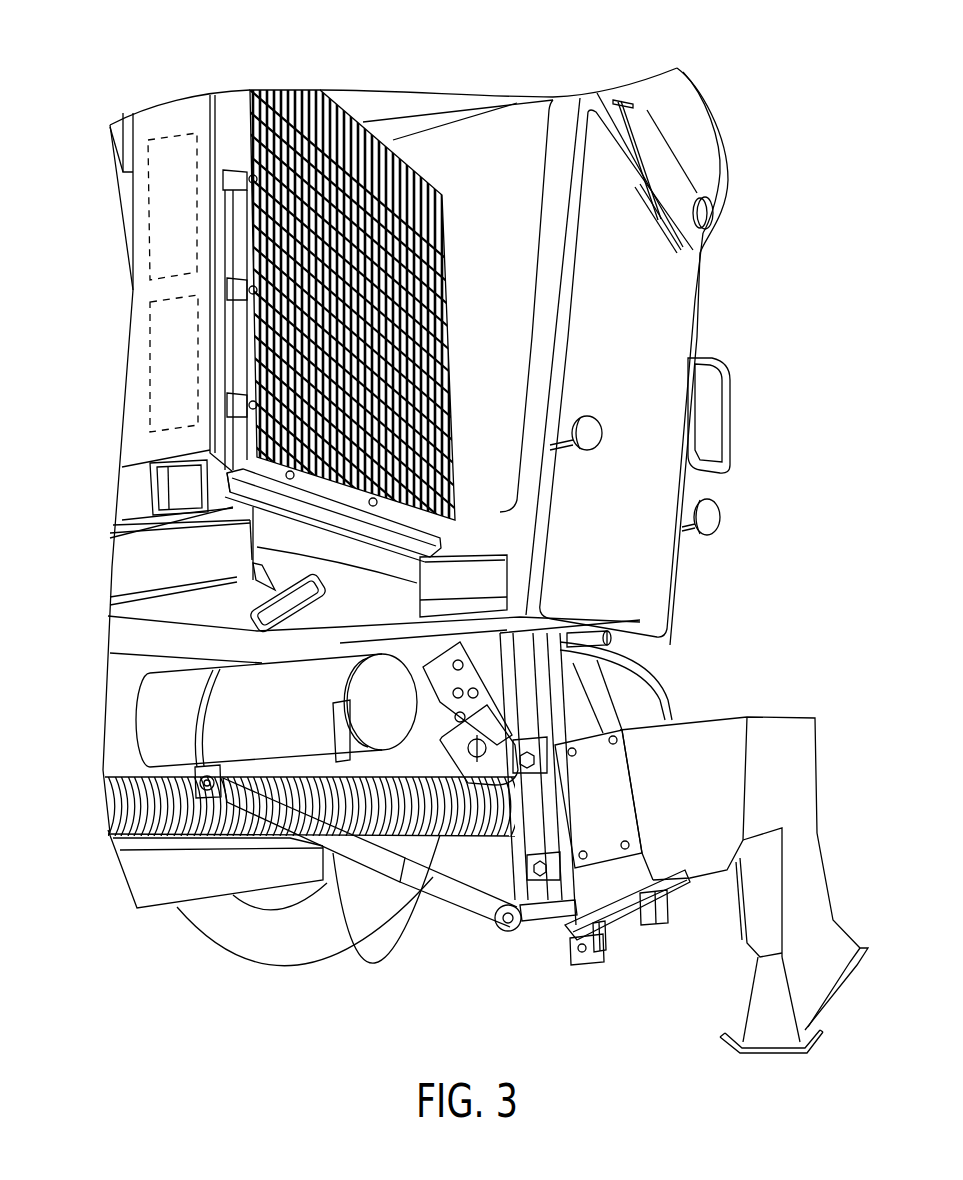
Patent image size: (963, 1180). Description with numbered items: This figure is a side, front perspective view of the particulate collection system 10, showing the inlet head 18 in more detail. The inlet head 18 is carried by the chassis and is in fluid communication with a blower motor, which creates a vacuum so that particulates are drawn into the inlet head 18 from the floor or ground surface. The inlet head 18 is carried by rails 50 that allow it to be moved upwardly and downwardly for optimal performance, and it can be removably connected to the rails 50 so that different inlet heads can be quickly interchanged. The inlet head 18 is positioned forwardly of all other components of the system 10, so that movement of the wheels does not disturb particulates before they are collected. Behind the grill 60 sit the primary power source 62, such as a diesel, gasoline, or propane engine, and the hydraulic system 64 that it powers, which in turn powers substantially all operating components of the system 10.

The system 10 is at (812, 333).
The inlet head 18 is at (808, 863).
The rails 50 is at (538, 672).
The grill 60 is at (364, 108).
The primary power source 62 is at (165, 135).
The hydraulic system 64 is at (148, 358).